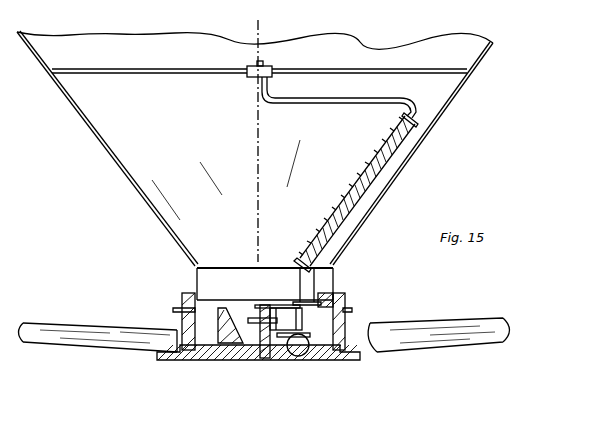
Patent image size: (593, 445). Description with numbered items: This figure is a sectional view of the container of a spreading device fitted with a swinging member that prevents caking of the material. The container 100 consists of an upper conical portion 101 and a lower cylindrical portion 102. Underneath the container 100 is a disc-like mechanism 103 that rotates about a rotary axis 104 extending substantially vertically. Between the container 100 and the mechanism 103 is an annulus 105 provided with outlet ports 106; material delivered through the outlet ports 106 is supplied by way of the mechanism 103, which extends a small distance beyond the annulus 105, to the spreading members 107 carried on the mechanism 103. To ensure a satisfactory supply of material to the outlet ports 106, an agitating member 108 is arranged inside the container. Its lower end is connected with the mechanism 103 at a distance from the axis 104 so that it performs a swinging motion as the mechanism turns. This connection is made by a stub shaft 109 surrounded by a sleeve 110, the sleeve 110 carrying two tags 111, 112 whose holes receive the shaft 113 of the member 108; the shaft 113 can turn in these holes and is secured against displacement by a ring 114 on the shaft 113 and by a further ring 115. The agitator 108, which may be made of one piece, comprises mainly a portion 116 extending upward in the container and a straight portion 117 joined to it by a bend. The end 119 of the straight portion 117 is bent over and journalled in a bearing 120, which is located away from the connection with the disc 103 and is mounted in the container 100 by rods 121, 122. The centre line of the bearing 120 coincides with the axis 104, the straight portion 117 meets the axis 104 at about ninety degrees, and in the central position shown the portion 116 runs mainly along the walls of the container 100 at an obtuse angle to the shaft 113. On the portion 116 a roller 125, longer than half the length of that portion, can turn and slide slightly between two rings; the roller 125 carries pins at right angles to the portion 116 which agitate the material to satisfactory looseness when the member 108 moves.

The container 100 is at (126, 183).
The conical portion 101 is at (173, 239).
The cylindrical portion 102 is at (336, 274).
The mechanism 103 is at (220, 358).
The rotary axis 104 is at (258, 118).
The annulus 105 is at (190, 294).
The outlet ports 106 is at (222, 323).
The spreading members 107 is at (80, 325).
The agitating member 108 is at (305, 103).
The stub shaft 109 is at (280, 305).
The sleeve 110 is at (254, 308).
The tag 111 is at (303, 316).
The tag 112 is at (320, 334).
The shaft 113 is at (266, 358).
The ring 114 is at (334, 290).
The ring 115 is at (300, 356).
The portion 116 is at (303, 258).
The straight portion 117 is at (355, 98).
The end 119 is at (263, 62).
The bearing 120 is at (252, 66).
The rod 121 is at (115, 69).
The rod 122 is at (415, 69).
The roller 125 is at (337, 210).